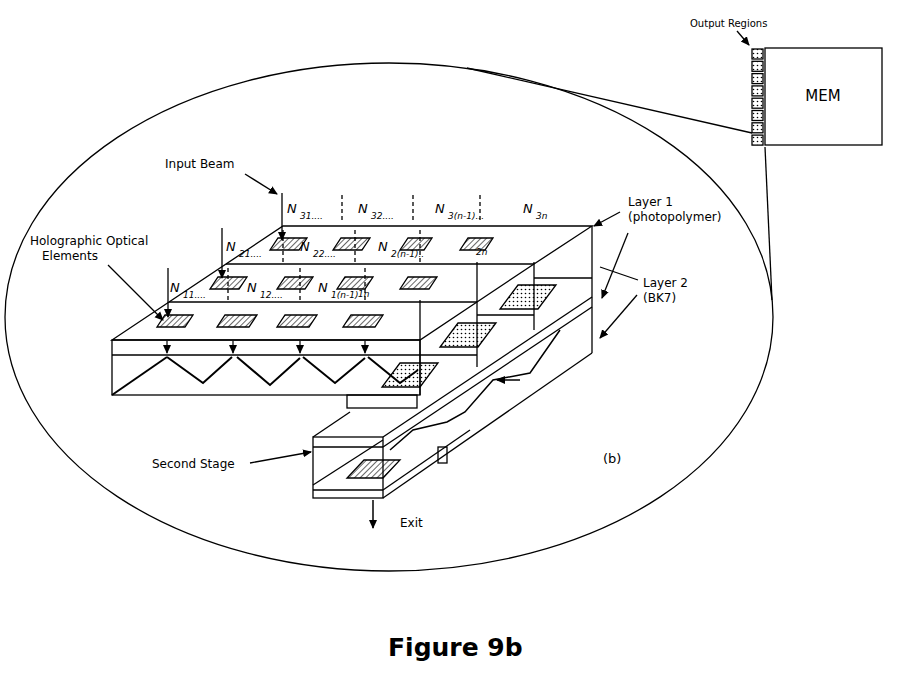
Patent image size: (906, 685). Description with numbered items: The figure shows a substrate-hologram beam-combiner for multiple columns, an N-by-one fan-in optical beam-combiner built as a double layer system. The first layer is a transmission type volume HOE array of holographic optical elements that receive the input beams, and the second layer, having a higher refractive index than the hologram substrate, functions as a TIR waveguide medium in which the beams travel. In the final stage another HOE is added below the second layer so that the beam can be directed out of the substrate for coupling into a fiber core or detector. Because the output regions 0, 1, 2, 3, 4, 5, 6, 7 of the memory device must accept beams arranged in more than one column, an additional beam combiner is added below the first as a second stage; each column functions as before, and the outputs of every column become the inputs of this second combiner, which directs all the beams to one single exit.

The output region 0 is at (752, 140).
The output region 1 is at (752, 128).
The output region 2 is at (752, 116).
The output region 3 is at (752, 103).
The output region 4 is at (752, 91).
The output region 5 is at (752, 79).
The output region 6 is at (752, 66).
The output region 7 is at (752, 54).